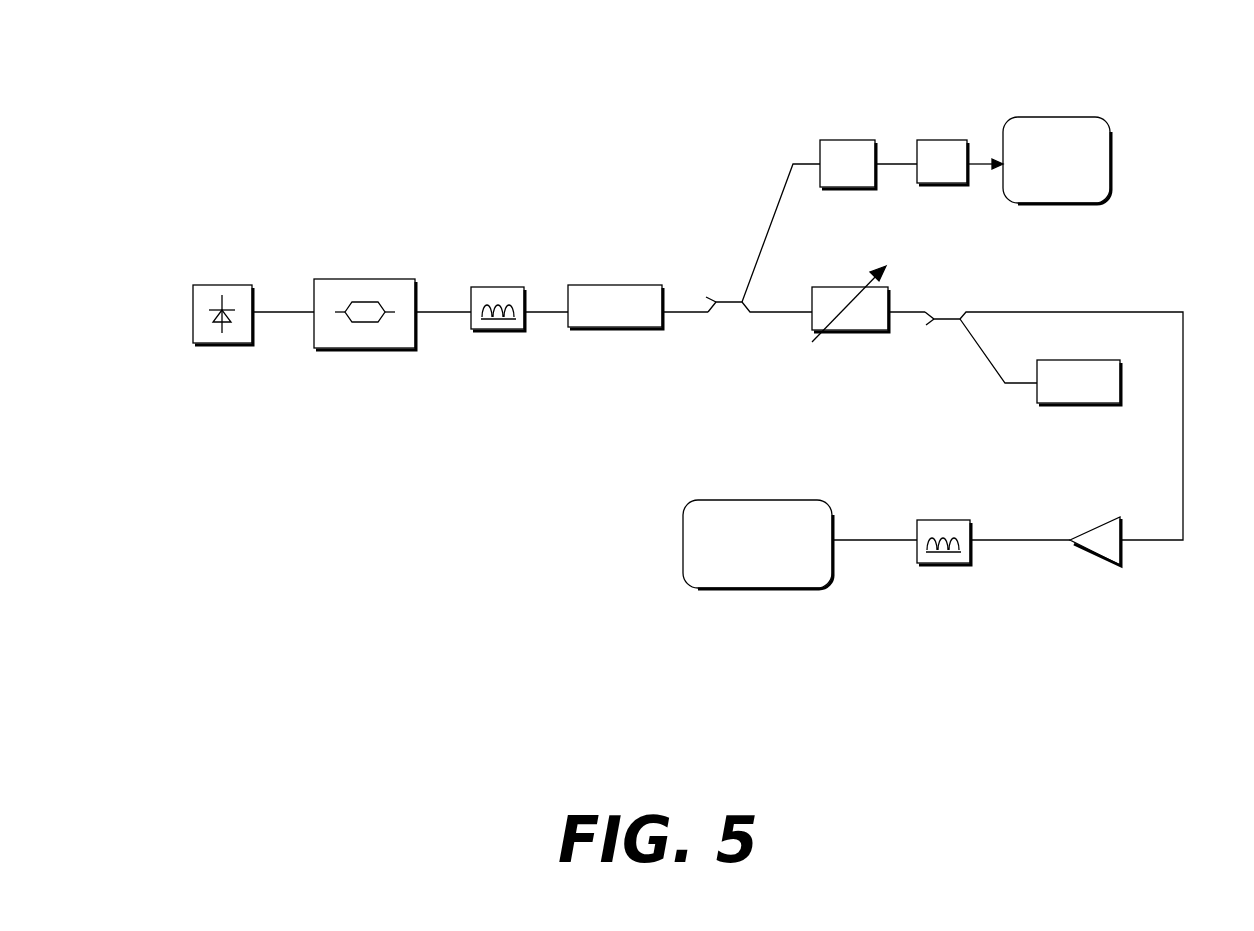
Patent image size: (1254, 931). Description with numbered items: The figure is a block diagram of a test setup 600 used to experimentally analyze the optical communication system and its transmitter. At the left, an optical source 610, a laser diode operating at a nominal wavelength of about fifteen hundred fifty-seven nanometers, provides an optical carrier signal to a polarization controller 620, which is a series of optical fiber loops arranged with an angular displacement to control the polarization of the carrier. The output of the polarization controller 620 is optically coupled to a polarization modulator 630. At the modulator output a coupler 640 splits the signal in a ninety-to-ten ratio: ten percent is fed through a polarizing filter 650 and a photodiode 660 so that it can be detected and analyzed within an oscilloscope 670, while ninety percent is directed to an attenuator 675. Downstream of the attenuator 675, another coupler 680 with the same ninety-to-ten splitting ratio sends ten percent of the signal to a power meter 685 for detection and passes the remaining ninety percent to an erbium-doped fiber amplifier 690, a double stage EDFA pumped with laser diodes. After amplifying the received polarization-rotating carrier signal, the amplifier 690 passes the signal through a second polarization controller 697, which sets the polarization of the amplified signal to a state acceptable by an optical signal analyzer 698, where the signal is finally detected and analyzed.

The test setup 600 is at (320, 572).
The optical source 610 is at (221, 343).
The polarization controller 620 is at (498, 329).
The polarization modulator 630 is at (613, 327).
The coupler 640 is at (731, 302).
The polarizing filter 650 is at (840, 140).
The photodiode 660 is at (946, 140).
The oscilloscope 670 is at (1073, 117).
The attenuator 675 is at (857, 330).
The coupler 680 is at (948, 319).
The power meter 685 is at (1064, 403).
The erbium-doped fiber amplifier 690 is at (1095, 555).
The polarization controller 697 is at (941, 563).
The optical signal analyzer 698 is at (738, 588).